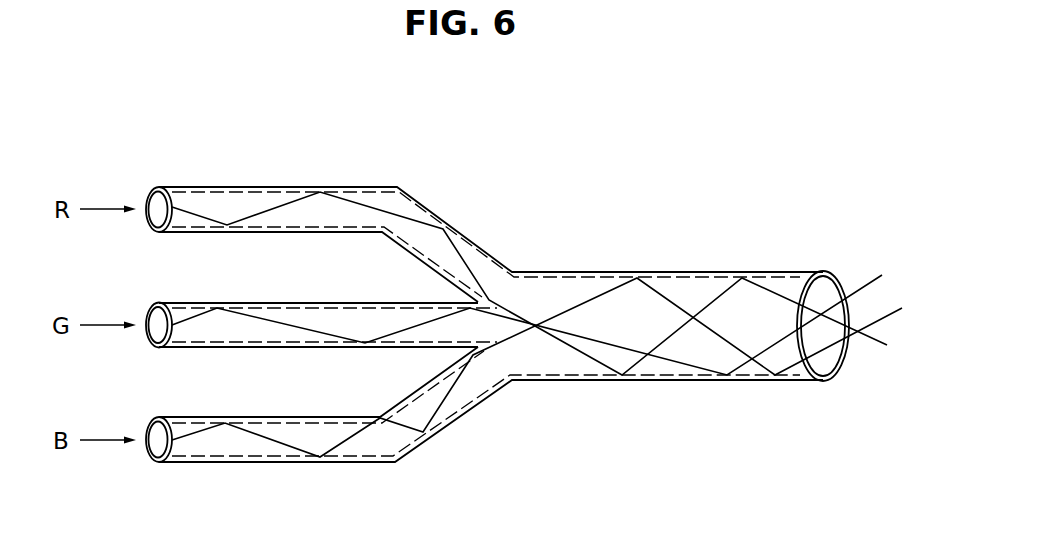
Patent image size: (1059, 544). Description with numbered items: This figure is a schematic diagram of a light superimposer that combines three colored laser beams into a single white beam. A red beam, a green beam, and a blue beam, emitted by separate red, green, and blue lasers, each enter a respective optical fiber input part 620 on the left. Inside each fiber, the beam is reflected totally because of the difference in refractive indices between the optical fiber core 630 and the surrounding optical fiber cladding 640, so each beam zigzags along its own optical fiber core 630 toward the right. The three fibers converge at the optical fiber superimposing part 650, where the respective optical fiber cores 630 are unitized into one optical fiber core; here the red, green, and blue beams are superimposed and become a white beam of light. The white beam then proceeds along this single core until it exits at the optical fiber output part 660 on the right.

The optical fiber input part 620 is at (178, 158).
The optical fiber core 630 is at (252, 189).
The optical fiber cladding 640 is at (323, 187).
The optical fiber superimposing part 650 is at (522, 256).
The optical fiber output part 660 is at (840, 265).